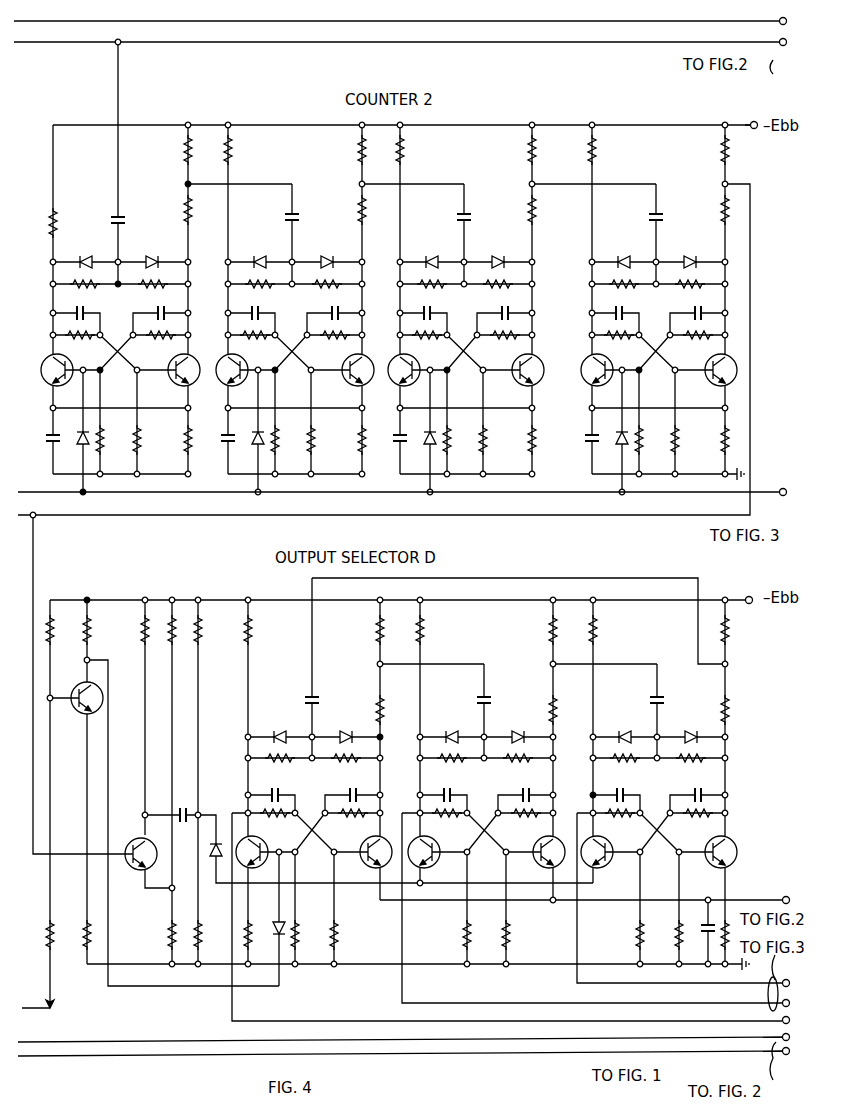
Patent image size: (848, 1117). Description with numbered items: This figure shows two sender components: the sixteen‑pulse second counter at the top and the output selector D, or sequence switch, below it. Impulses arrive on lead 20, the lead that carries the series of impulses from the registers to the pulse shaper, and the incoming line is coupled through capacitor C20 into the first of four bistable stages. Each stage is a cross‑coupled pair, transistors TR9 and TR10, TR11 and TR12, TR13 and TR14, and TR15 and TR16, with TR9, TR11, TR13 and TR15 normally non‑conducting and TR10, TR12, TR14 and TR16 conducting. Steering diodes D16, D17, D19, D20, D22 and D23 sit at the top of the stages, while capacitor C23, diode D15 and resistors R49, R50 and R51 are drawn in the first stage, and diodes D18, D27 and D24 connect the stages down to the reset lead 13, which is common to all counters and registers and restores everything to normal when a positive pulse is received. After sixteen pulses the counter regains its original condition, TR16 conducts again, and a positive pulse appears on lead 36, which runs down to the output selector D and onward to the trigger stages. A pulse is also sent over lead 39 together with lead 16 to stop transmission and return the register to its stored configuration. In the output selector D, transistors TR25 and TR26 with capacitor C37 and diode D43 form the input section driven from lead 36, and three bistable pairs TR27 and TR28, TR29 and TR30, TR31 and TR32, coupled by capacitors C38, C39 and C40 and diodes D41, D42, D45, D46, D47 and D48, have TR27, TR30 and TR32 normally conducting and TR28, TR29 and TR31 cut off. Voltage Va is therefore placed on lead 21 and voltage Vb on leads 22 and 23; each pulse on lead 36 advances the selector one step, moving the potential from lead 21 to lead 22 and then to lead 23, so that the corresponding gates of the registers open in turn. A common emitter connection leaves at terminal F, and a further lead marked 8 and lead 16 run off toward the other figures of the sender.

The lead 39 is at (47, 25).
The lead 20 is at (47, 46).
The capacitor C20 is at (128, 222).
The diode D16 is at (264, 254).
The diode D17 is at (335, 254).
The diode D19 is at (441, 254).
The diode D20 is at (512, 254).
The diode D22 is at (633, 254).
The diode D23 is at (703, 254).
The transistor TR9 is at (70, 363).
The transistor TR10 is at (162, 363).
The transistor TR11 is at (249, 363).
The transistor TR12 is at (336, 363).
The transistor TR13 is at (420, 363).
The transistor TR14 is at (506, 363).
The transistor TR15 is at (613, 363).
The transistor TR16 is at (700, 363).
The capacitor C23 is at (46, 439).
The diode D15 is at (78, 442).
The resistor R49 is at (116, 432).
The resistor R50 is at (155, 432).
The resistor R51 is at (205, 432).
The diode D18 is at (255, 450).
The diode D27 is at (426, 450).
The diode D24 is at (618, 450).
The lead 13 is at (781, 486).
The lead 36 is at (758, 195).
The transistor TR25 is at (78, 686).
The transistor TR26 is at (132, 870).
The capacitor C37 is at (188, 811).
The capacitor C38 is at (320, 704).
The capacitor C39 is at (272, 778).
The capacitor C40 is at (352, 779).
The diode D41 is at (284, 729).
The diode D42 is at (358, 729).
The diode D43 is at (213, 862).
The diode D45 is at (459, 729).
The diode D46 is at (529, 729).
The diode D47 is at (631, 729).
The diode D48 is at (701, 729).
The transistor TR27 is at (268, 845).
The transistor TR28 is at (360, 845).
The transistor TR29 is at (439, 845).
The transistor TR30 is at (530, 845).
The transistor TR31 is at (612, 845).
The transistor TR32 is at (704, 845).
The output terminal F is at (777, 895).
The lead 23 is at (688, 979).
The lead 22 is at (688, 999).
The lead 21 is at (688, 1017).
The lead 16 is at (690, 1034).
The gate 8 is at (688, 1049).